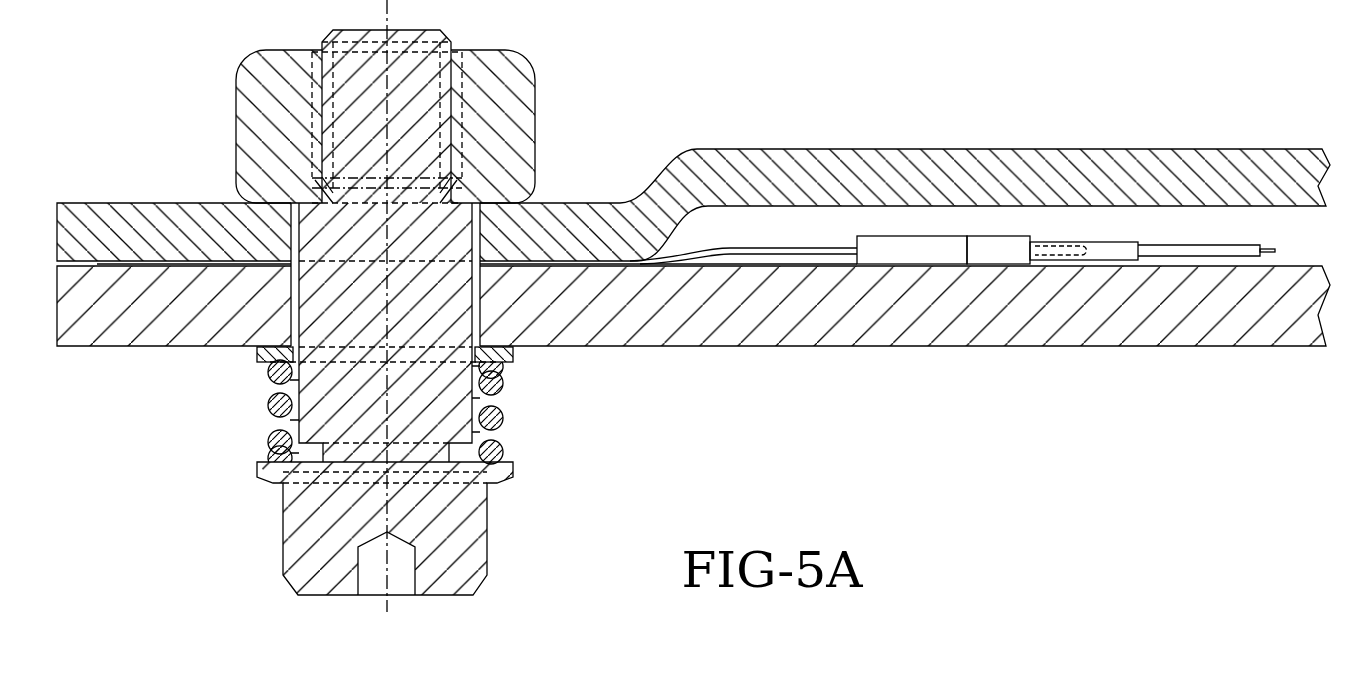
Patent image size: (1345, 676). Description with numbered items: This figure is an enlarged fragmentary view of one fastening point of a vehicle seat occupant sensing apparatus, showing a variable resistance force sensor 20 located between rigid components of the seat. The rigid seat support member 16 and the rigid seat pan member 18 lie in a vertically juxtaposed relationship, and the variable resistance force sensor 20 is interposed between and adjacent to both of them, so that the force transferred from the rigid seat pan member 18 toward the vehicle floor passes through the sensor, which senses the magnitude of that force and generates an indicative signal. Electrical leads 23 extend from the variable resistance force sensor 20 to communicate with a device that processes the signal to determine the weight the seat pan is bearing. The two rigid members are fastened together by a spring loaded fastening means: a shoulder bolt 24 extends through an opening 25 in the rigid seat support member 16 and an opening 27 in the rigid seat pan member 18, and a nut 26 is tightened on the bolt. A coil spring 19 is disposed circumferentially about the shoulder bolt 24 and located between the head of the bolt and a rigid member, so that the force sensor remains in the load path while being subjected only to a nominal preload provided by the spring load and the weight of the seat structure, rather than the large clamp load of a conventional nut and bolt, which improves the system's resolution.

The rigid seat support member 16 is at (1072, 327).
The rigid seat pan member 18 is at (1200, 163).
The coil spring 19 is at (495, 417).
The variable resistance force sensor 20 is at (723, 250).
The electrical leads 23 is at (1213, 248).
The shoulder bolt 24 is at (290, 525).
The opening in the rigid seat support member 25 is at (292, 294).
The nut 26 is at (512, 103).
The opening in the rigid seat pan member 27 is at (305, 235).